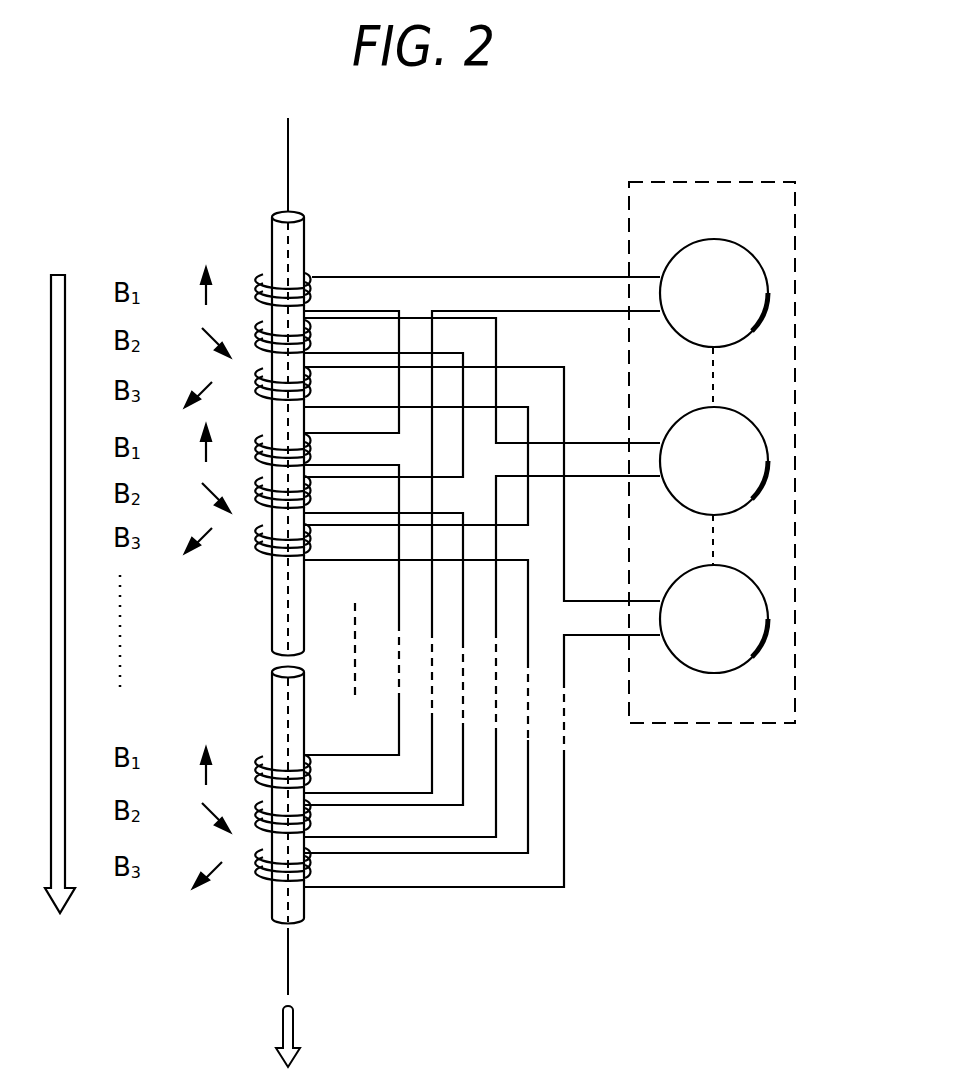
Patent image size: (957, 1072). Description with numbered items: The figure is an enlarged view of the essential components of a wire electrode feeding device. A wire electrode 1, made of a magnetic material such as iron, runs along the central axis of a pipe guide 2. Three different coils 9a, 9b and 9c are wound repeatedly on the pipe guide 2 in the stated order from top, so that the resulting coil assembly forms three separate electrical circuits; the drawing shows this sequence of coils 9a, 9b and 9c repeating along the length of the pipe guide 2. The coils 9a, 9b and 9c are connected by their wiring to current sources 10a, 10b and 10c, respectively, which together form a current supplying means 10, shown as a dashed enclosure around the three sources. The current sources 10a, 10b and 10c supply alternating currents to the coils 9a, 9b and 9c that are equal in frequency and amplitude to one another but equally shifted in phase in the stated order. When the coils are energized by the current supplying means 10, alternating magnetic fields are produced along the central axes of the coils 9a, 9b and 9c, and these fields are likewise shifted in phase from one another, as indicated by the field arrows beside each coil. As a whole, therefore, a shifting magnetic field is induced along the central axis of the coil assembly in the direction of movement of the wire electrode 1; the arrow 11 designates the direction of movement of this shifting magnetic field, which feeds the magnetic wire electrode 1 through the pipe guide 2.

The wire electrode 1 is at (289, 143).
The pipe guide 2 is at (304, 237).
The first coil 9a is at (312, 281).
The second coil 9b is at (312, 337).
The third coil 9c is at (312, 380).
The current supplying means 10 is at (697, 182).
The first current source 10a is at (768, 296).
The second current source 10b is at (768, 460).
The third current source 10c is at (768, 621).
The direction of movement of the shifting magnetic field 11 is at (58, 276).